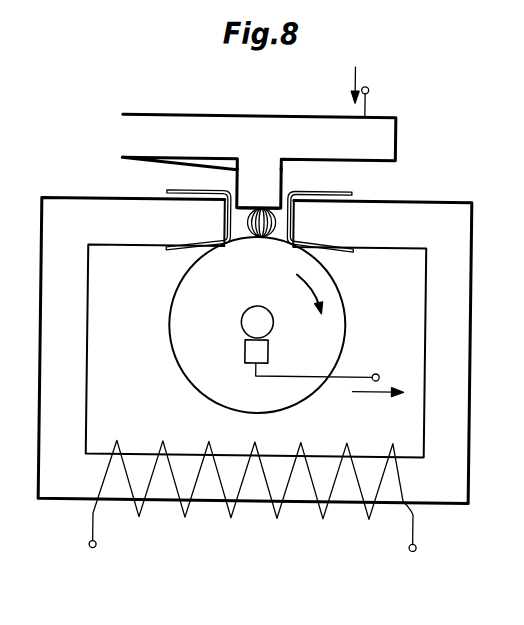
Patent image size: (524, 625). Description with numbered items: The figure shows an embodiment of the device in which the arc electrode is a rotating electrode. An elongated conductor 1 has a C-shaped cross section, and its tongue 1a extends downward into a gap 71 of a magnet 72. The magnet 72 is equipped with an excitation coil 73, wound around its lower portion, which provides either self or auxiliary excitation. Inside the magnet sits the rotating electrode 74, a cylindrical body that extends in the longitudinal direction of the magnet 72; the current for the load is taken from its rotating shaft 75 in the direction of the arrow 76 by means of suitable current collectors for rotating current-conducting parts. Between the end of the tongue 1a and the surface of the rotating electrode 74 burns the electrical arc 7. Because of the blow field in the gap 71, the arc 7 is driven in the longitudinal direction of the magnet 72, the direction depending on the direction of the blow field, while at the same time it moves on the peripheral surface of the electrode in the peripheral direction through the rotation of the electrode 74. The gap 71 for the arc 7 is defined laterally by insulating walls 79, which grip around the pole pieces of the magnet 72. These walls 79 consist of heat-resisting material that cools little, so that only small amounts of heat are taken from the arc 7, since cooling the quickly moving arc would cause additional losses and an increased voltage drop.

The elongated conductor 1 is at (380, 136).
The tongue 1a is at (278, 177).
The electrical arc 7 is at (260, 205).
The gap 71 is at (236, 228).
The magnet 72 is at (455, 421).
The excitation coil 73 is at (95, 550).
The rotating electrode 74 is at (333, 336).
The rotating shaft 75 is at (255, 323).
The arrow 76 is at (372, 393).
The insulating walls 79 is at (286, 218).